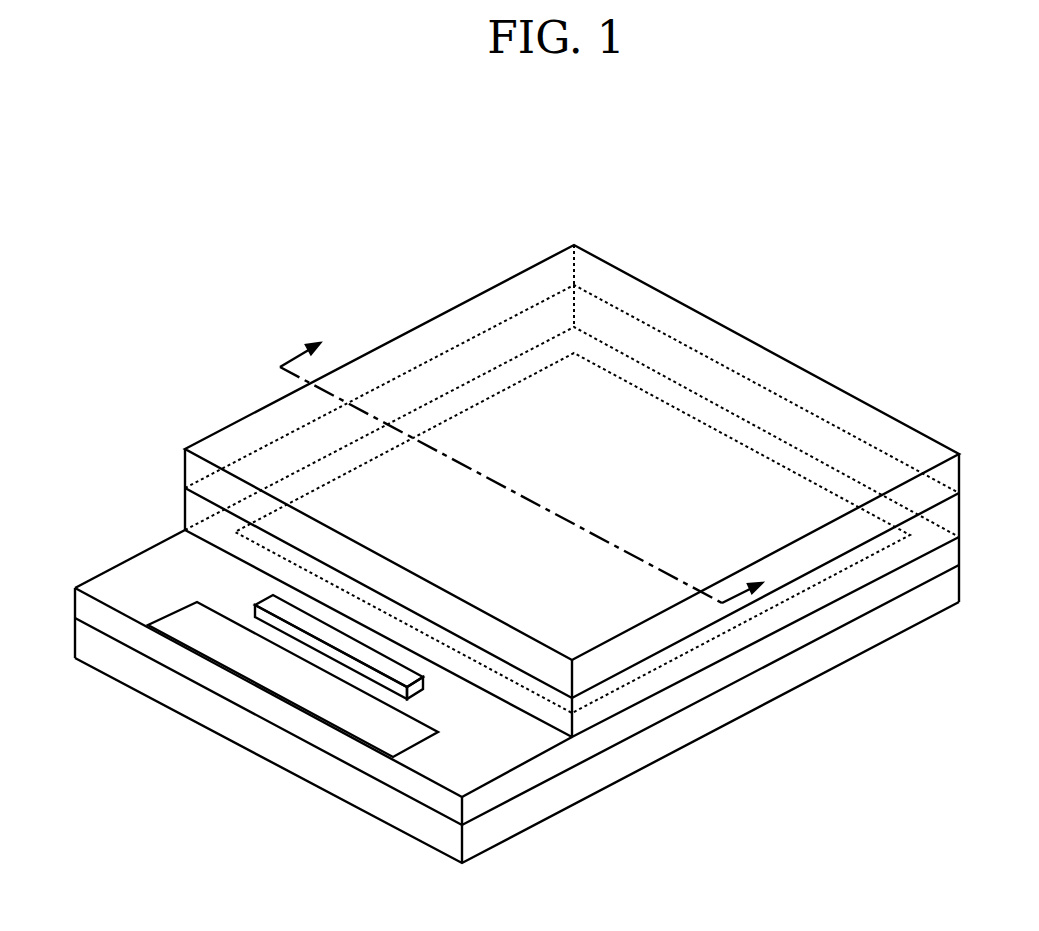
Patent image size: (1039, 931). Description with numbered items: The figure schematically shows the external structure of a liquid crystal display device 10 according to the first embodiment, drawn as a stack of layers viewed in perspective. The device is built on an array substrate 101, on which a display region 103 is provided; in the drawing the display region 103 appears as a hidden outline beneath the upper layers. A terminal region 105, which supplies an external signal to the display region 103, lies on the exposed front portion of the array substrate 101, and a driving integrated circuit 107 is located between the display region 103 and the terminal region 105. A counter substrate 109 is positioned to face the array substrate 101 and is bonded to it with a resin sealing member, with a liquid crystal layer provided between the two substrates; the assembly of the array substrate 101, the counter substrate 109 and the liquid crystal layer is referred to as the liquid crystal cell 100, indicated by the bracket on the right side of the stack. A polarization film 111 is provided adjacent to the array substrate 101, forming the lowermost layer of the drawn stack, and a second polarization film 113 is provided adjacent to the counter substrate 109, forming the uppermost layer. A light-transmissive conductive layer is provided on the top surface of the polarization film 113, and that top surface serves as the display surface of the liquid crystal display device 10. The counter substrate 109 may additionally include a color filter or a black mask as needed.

The liquid crystal display device 10 is at (555, 518).
The liquid crystal cell 100 is at (548, 555).
The array substrate 101 is at (855, 603).
The display region 103 is at (673, 660).
The terminal region 105 is at (407, 742).
The driving integrated circuit 107 is at (413, 688).
The counter substrate 109 is at (192, 507).
The polarization film 111 is at (957, 592).
The polarization film 113 is at (192, 473).